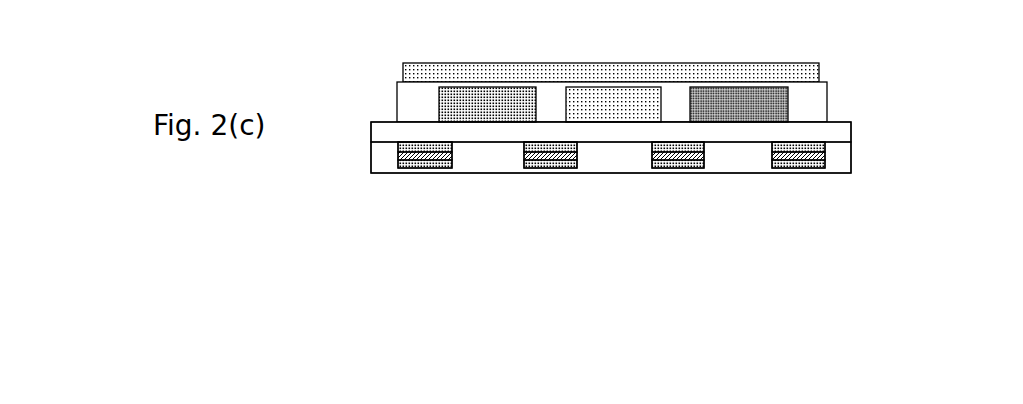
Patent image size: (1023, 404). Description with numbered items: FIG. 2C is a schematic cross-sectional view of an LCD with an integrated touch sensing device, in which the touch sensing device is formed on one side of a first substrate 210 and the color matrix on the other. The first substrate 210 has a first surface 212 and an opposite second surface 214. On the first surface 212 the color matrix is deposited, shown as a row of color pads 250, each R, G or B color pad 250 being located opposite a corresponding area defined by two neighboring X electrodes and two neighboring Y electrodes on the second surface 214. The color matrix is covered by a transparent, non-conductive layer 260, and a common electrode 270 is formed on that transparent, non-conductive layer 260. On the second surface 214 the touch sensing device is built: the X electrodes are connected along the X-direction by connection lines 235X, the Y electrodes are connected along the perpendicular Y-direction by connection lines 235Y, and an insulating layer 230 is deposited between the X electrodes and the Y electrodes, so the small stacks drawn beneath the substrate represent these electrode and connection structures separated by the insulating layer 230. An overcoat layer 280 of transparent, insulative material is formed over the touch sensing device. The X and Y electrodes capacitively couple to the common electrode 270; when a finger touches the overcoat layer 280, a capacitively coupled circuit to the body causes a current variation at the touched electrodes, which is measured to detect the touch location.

The first substrate 210 is at (647, 167).
The first surface 212 is at (842, 117).
The second surface 214 is at (842, 144).
The insulating layer 230 is at (435, 168).
The connection lines 235X is at (547, 168).
The connection lines 235Y is at (810, 168).
The color pad 250 is at (491, 105).
The transparent, non-conductive layer 260 is at (803, 88).
The common electrode 270 is at (662, 70).
The overcoat layer 280 is at (743, 153).